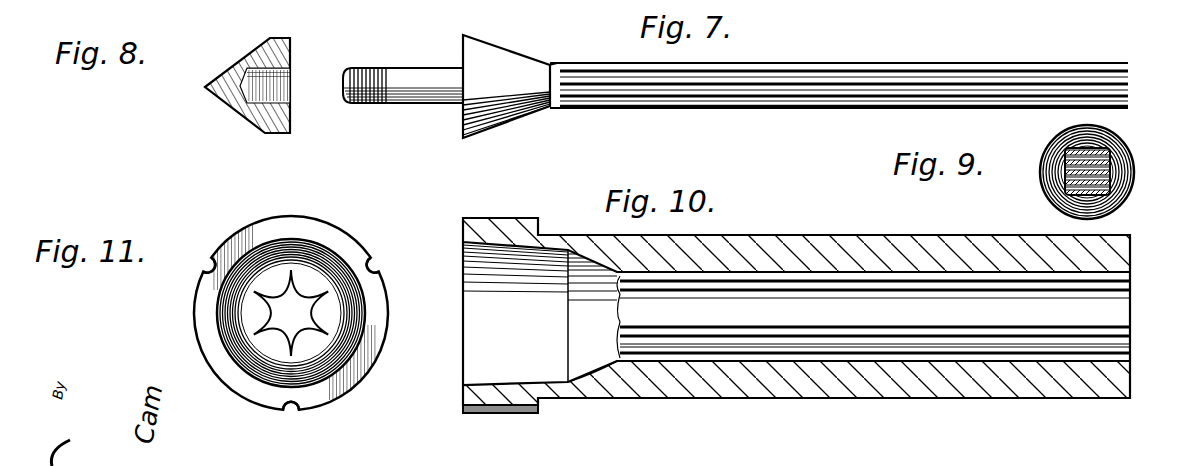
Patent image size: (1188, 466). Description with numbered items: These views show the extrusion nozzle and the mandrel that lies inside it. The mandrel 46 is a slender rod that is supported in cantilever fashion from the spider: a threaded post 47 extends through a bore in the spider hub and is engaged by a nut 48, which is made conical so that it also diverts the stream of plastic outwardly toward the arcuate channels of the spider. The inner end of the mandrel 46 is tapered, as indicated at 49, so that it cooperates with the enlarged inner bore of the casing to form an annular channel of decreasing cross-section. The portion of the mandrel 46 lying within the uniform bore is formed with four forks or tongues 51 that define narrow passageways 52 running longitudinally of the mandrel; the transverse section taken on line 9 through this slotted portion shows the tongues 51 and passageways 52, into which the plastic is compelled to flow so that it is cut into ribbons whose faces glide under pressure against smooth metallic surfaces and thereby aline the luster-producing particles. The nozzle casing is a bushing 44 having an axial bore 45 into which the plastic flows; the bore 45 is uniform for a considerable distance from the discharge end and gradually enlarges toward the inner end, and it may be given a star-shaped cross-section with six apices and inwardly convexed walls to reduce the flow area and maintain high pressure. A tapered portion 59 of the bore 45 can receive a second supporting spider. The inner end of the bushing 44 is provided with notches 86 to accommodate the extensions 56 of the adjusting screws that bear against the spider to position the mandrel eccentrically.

In FIG. 7, the section line 9— 9 is at (802, 135).
In FIG. 11, the bushing 44 is at (328, 224).
In FIG. 10, the bushing 44 is at (907, 236).
In FIG. 11, the axial bore 45 is at (310, 338).
In FIG. 10, the axial bore 45 is at (1117, 307).
In FIG. 7, the mandrel 46 is at (740, 111).
In FIG. 7, the threaded post 47 is at (364, 104).
In FIG. 8, the nut 48 is at (244, 120).
In FIG. 7, the tapered inner end of mandrel 49 is at (517, 60).
In FIG. 9, the tapered inner end of mandrel 49 is at (1118, 137).
In FIG. 7, the tongues 51 is at (1130, 66).
In FIG. 9, the tongues 51 is at (1108, 162).
In FIG. 7, the passageways 52 is at (1130, 80).
In FIG. 9, the passageways 52 is at (1105, 185).
In FIG. 10, the extensions 56 is at (472, 414).
In FIG. 10, the tapered portion 59 is at (598, 368).
In FIG. 11, the notches 86 is at (376, 266).